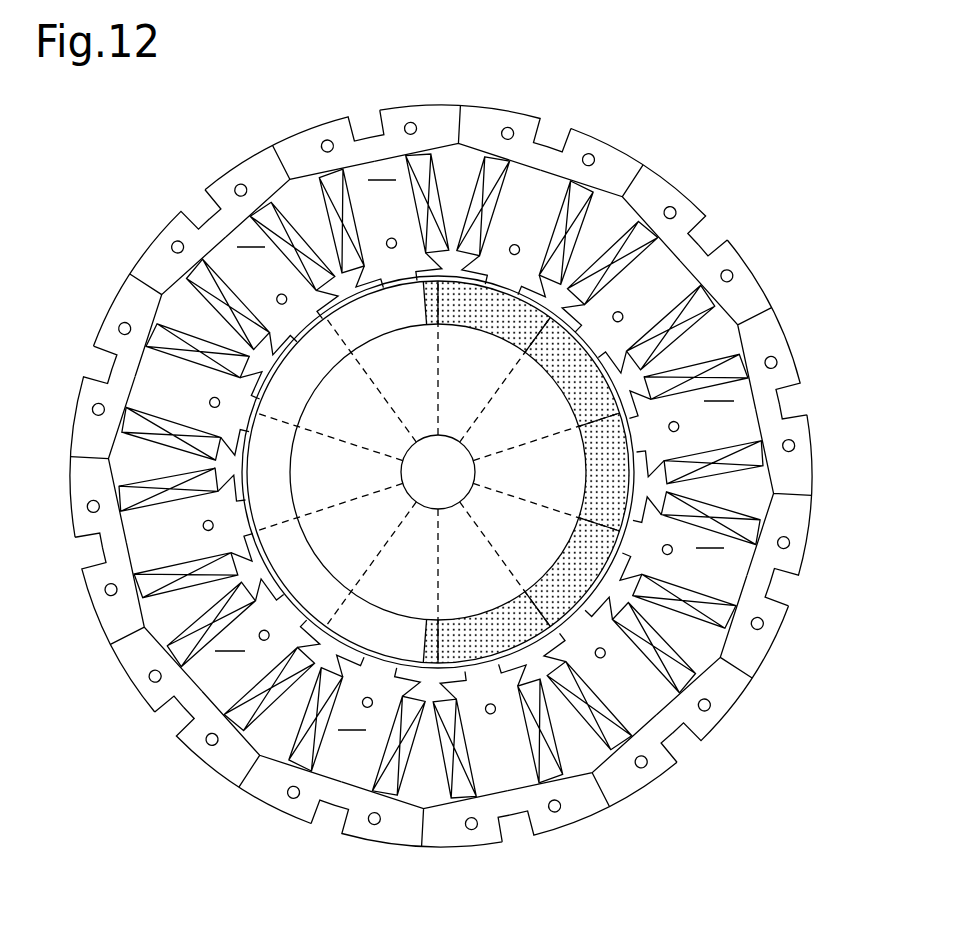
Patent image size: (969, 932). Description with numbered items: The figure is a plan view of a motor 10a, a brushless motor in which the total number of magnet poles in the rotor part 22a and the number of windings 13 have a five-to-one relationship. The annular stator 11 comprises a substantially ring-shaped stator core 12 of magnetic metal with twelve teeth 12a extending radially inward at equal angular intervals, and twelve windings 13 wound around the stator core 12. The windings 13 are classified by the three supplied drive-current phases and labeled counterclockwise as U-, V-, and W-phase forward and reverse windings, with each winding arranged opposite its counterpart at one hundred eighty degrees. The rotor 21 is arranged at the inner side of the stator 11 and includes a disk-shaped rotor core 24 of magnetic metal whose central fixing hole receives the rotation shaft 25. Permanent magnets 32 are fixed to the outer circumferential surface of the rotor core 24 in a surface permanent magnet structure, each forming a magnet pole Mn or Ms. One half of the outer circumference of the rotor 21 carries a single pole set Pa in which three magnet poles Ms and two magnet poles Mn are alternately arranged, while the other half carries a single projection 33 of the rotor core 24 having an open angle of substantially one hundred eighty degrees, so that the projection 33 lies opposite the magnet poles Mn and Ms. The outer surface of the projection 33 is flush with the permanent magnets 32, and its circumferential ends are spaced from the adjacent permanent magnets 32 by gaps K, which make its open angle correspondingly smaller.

The motor 10a is at (722, 130).
The stator 11 is at (704, 209).
The stator core 12 is at (742, 279).
The teeth 12a is at (406, 194).
The windings 13 is at (333, 172).
The rotor 21 is at (525, 292).
The rotor part 22a is at (313, 670).
The rotor core 24 is at (436, 612).
The rotation shaft 25 is at (443, 500).
The permanent magnets 32 is at (583, 443).
The projection 33 is at (275, 478).
The gaps K is at (430, 316).
The magnet poles (S-pole) Ms is at (523, 285).
The magnet poles (N-pole) Mn is at (595, 352).
The pole set Pa is at (606, 554).